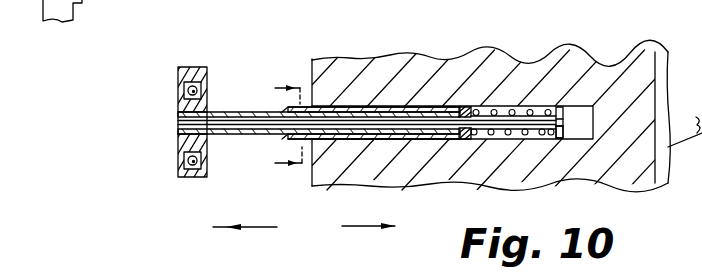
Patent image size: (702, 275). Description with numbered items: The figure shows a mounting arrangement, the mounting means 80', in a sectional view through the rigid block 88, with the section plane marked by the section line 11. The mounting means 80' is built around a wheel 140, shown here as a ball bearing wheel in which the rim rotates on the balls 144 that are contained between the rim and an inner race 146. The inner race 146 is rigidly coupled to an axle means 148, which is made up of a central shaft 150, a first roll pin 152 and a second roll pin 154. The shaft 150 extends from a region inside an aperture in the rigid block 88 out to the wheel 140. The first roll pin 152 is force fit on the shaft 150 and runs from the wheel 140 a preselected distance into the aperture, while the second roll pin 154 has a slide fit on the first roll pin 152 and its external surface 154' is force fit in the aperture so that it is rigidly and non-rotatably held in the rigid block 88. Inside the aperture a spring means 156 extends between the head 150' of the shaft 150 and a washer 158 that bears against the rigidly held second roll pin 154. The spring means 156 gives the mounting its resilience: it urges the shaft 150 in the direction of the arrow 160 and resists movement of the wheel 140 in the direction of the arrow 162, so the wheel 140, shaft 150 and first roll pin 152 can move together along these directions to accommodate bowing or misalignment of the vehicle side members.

The mounting means 80' is at (202, 103).
The rigid block 88 is at (413, 53).
The wheel 140 is at (178, 98).
The balls 144 is at (178, 153).
The inner race 146 is at (207, 90).
The axle means 148 is at (264, 177).
The first roll pin 152 is at (257, 113).
The second roll pin 154 is at (374, 92).
The external surface 154' is at (374, 151).
The spring means 156 is at (583, 124).
The washer 158 is at (462, 106).
The central shaft 150 is at (592, 100).
The head 150' is at (580, 152).
The section line 11 is at (288, 128).
The arrow 160 is at (348, 226).
The arrow 162 is at (248, 224).